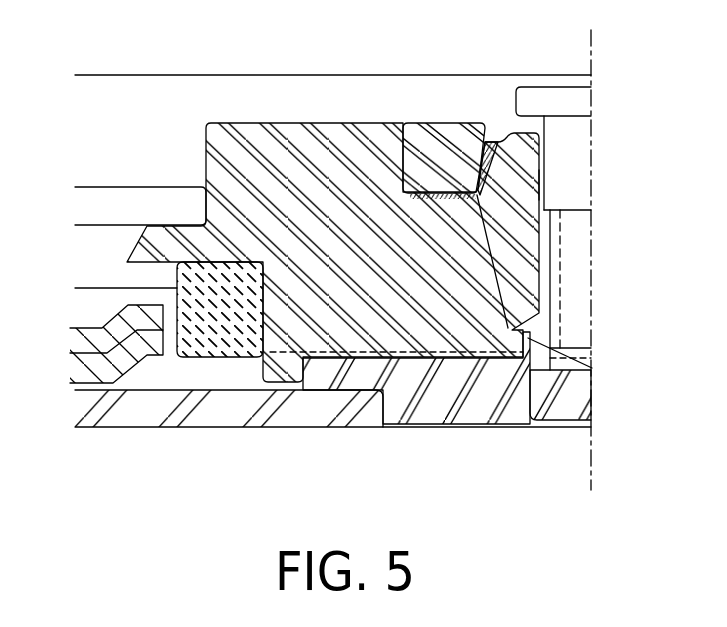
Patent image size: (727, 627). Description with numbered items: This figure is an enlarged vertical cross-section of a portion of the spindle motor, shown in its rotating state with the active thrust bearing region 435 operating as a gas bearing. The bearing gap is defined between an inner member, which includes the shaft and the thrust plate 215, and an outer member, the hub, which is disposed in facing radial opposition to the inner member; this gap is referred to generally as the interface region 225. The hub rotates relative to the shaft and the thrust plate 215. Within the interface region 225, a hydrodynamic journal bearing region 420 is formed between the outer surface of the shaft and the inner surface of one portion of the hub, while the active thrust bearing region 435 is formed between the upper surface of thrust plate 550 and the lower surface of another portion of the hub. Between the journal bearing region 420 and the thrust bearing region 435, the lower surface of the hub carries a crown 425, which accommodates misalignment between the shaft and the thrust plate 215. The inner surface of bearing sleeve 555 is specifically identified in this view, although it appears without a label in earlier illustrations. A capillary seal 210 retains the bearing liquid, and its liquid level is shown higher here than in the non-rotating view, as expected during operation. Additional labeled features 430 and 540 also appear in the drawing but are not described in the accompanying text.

The capillary seal 210 is at (492, 142).
The thrust plate 215 is at (338, 391).
The interface region 225 is at (500, 325).
The hydrodynamic journal bearing region 420 is at (545, 215).
The crown 425 is at (522, 325).
The shoulder 430 is at (528, 338).
The active thrust bearing region 435 is at (432, 357).
The sealing lip 540 is at (477, 193).
The upper surface of thrust plate 550 is at (487, 310).
The inner surface of bearing sleeve 555 is at (478, 218).